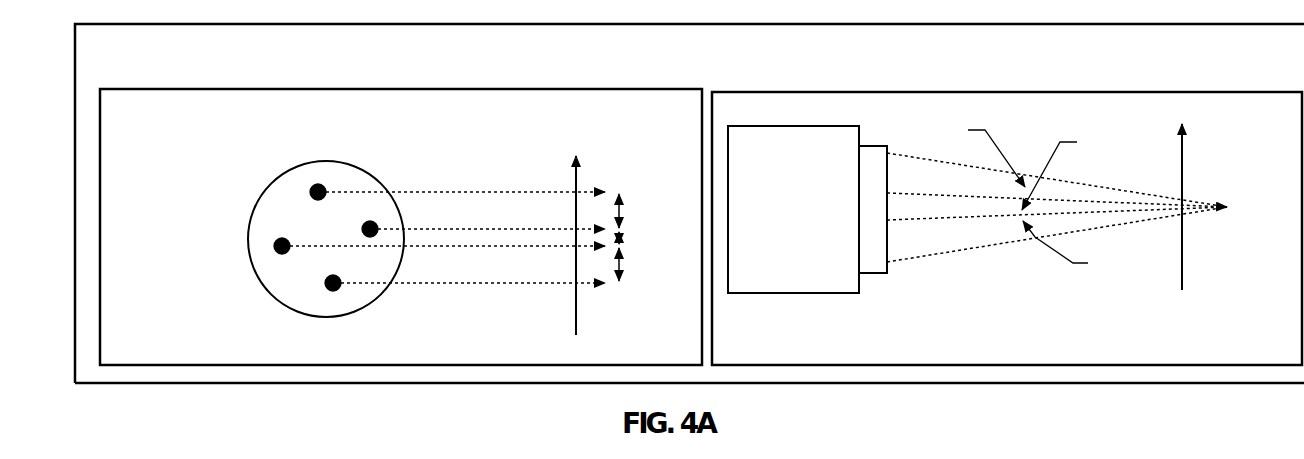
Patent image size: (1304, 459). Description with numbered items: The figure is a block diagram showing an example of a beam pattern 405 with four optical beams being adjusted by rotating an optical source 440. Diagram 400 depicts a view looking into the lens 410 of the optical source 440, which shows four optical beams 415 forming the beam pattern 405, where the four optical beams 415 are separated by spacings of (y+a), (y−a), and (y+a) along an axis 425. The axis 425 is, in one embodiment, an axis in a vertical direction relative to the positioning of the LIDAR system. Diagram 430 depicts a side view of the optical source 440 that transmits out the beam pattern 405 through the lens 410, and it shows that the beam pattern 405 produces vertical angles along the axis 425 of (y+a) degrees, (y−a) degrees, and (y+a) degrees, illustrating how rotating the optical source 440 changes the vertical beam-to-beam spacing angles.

The diagram 400 is at (398, 88).
The diagram 430 is at (1000, 90).
The beam pattern 405 is at (453, 158).
The lens 410 is at (310, 163).
The optical beams 415 is at (290, 203).
The axis 425 is at (578, 312).
The optical source 440 is at (808, 232).